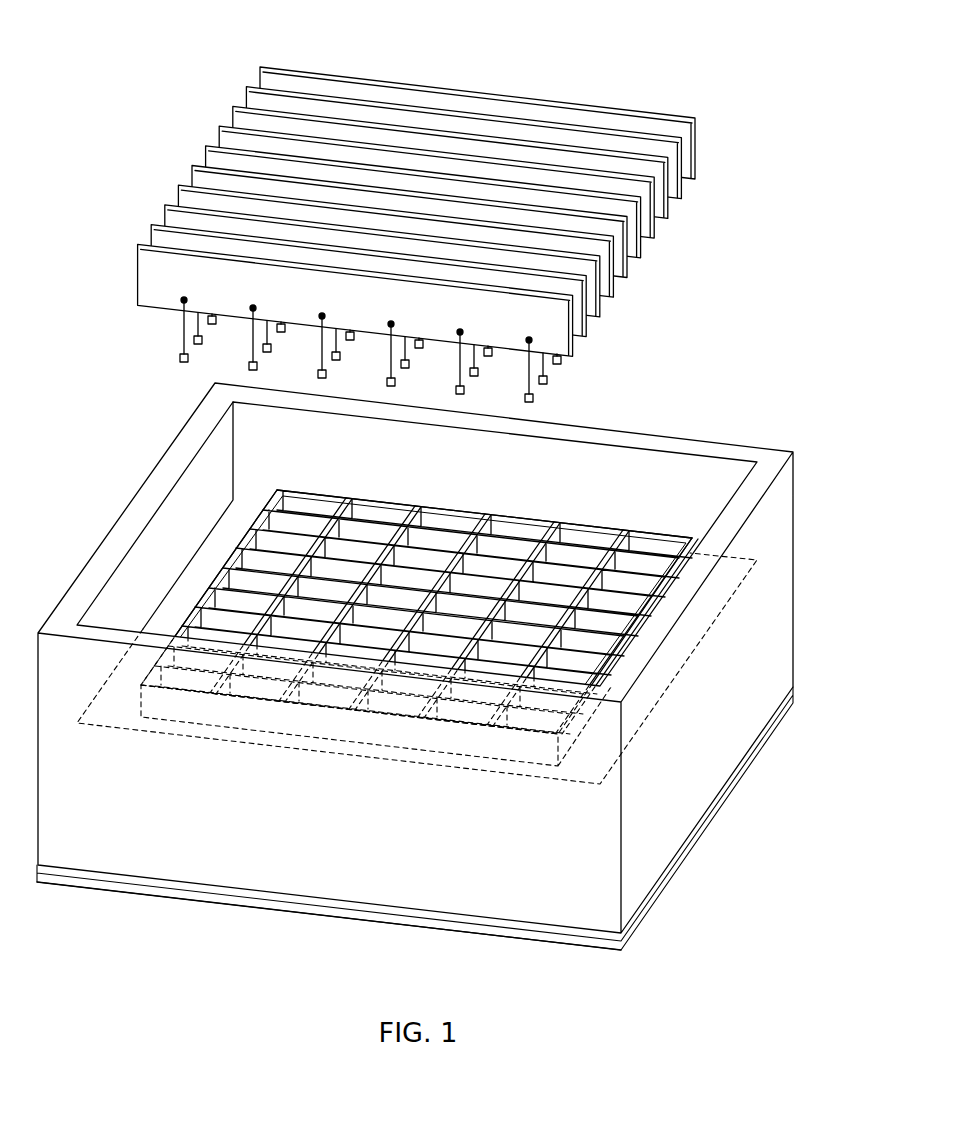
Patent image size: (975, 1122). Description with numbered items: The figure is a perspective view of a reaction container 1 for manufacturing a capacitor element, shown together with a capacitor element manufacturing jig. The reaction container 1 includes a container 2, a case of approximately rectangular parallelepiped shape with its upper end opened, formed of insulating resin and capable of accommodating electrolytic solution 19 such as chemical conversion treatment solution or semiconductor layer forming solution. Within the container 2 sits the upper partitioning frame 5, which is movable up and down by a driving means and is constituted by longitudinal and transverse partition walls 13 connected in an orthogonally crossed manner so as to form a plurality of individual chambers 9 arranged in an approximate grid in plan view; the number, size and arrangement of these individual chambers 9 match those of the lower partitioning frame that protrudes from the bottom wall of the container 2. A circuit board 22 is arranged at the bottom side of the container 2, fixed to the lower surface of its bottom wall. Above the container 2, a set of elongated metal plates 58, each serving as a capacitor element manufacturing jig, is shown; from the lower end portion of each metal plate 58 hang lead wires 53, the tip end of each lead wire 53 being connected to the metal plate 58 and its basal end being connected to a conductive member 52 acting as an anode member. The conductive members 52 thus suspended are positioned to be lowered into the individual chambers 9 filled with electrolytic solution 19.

The reaction container for manufacturing a capacitor element 1 is at (417, 647).
The container 2 is at (128, 520).
The electrolytic solution 19 is at (167, 620).
The circuit board 22 is at (657, 907).
The upper partitioning frame 5 is at (428, 552).
The individual chambers 9 is at (643, 548).
The partition walls 13 is at (300, 612).
The elongated metal plate 58 is at (245, 88).
The lead wire 53 is at (182, 333).
The conductive member 52 is at (180, 358).